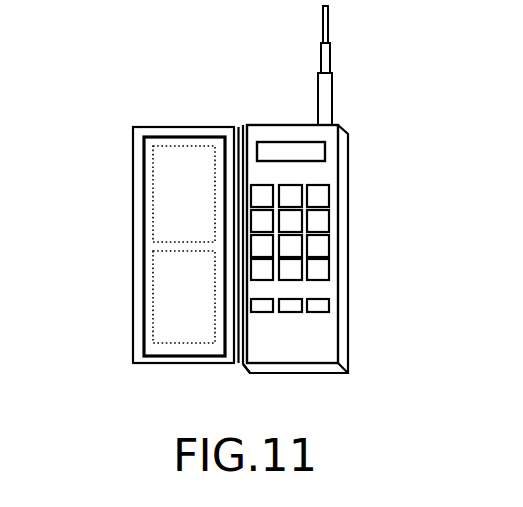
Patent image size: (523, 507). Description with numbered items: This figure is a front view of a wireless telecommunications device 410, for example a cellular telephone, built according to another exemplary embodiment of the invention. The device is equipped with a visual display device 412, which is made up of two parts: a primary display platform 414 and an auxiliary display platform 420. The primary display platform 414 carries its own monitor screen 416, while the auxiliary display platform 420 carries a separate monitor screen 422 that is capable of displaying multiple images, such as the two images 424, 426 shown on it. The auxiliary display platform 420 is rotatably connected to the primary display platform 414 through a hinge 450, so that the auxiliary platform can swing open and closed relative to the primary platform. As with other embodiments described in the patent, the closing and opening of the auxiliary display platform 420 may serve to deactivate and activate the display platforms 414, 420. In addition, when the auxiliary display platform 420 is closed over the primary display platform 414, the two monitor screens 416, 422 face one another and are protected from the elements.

The wireless telecommunications device 410 is at (124, 92).
The visual display device 412 is at (177, 127).
The primary display platform 414 is at (267, 141).
The monitor screen 416 is at (312, 152).
The auxiliary display platform 420 is at (142, 361).
The monitor screen 422 is at (144, 249).
The image 424 is at (208, 207).
The image 426 is at (208, 305).
The hinge 450 is at (243, 366).